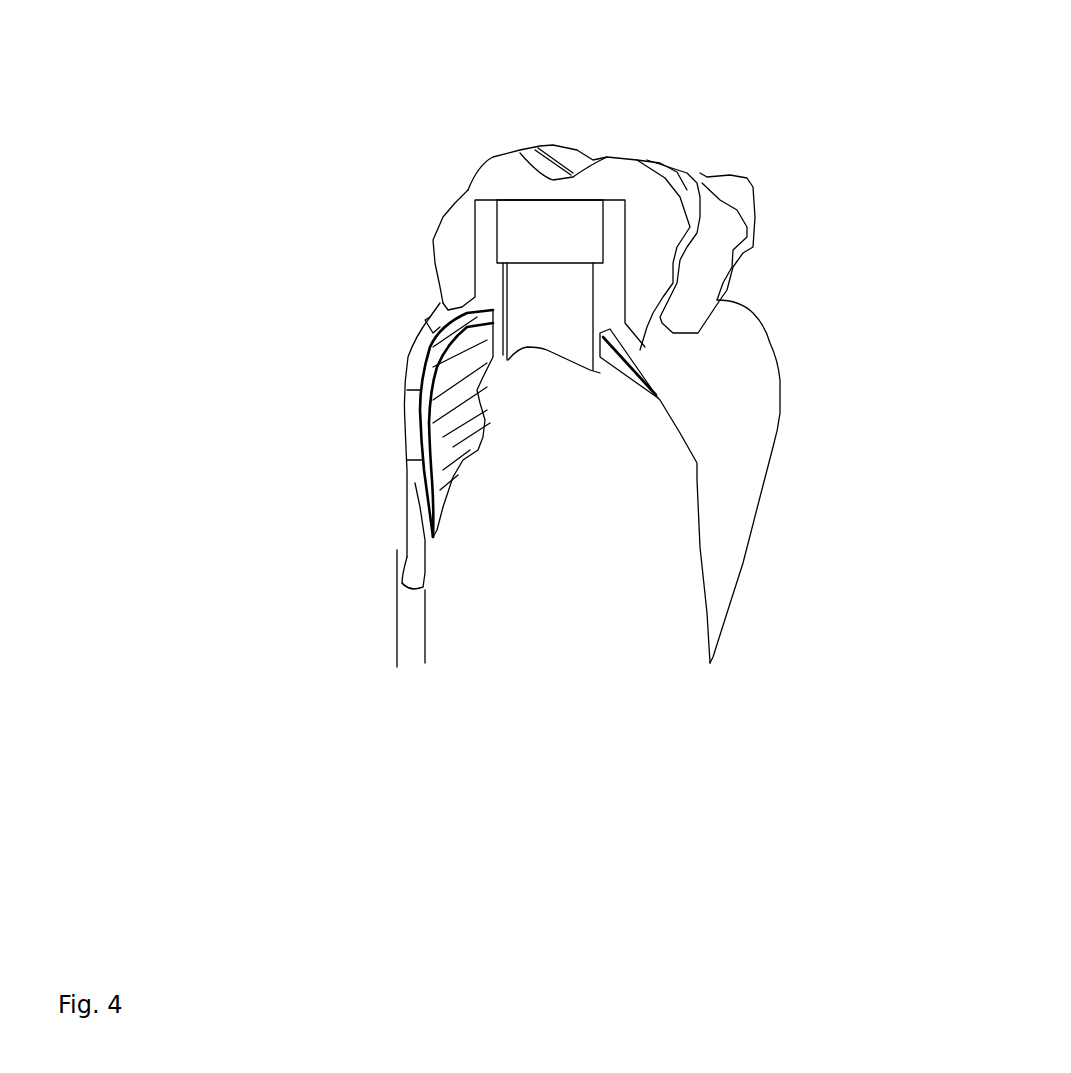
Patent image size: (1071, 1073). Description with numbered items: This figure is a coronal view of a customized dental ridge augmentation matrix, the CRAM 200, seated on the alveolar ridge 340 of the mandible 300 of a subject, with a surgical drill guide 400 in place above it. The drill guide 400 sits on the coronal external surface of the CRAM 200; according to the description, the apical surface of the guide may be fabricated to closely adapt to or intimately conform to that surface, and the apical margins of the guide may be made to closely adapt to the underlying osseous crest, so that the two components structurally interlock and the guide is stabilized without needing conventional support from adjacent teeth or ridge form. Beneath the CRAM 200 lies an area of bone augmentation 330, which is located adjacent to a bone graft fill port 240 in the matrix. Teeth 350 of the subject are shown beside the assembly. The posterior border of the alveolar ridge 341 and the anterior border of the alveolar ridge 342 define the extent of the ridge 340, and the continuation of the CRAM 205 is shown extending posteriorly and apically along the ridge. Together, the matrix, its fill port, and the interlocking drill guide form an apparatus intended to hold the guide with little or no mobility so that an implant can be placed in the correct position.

The CRAM 200 is at (423, 380).
The continuation of the CRAM 205 is at (413, 557).
The bone graft fill port 240 is at (417, 428).
The mandible 300 is at (730, 372).
The area of bone augmentation 330 is at (448, 472).
The alveolar ridge 340 is at (592, 508).
The posterior border of the alveolar ridge 341 is at (393, 630).
The anterior border of the alveolar ridge 342 is at (425, 620).
The teeth 350 is at (700, 173).
The surgical drill guide 400 is at (478, 227).